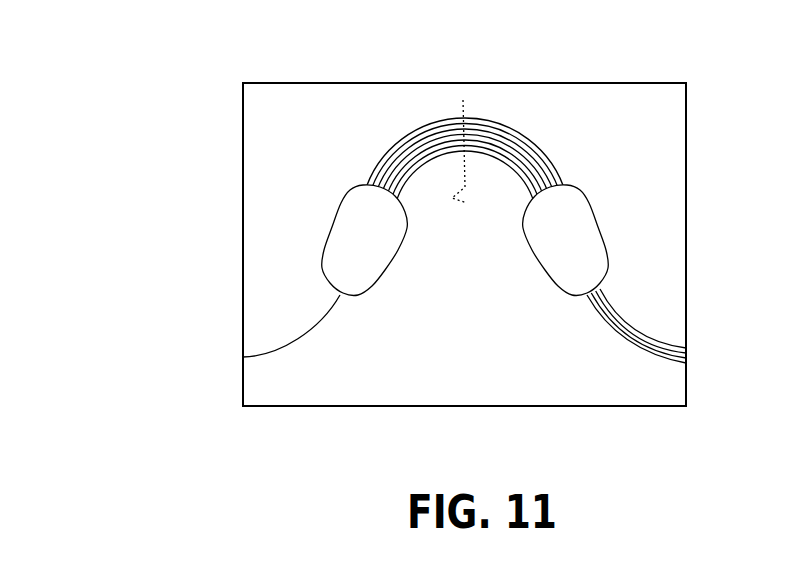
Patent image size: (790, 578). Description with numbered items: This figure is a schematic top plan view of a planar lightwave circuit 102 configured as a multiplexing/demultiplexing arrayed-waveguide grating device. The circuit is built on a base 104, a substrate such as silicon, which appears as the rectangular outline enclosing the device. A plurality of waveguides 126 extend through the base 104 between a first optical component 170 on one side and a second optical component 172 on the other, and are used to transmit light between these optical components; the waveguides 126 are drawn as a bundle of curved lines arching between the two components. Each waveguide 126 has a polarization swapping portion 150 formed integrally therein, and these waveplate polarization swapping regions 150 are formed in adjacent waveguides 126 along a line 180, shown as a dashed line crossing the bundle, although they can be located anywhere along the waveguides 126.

The planar lightwave circuit 102 is at (374, 223).
The base 104 is at (272, 83).
The waveguides 126 is at (552, 148).
The polarization swapping portions 150 is at (464, 226).
The first optical component 170 is at (336, 214).
The second optical component 172 is at (594, 214).
The line 180 is at (462, 102).